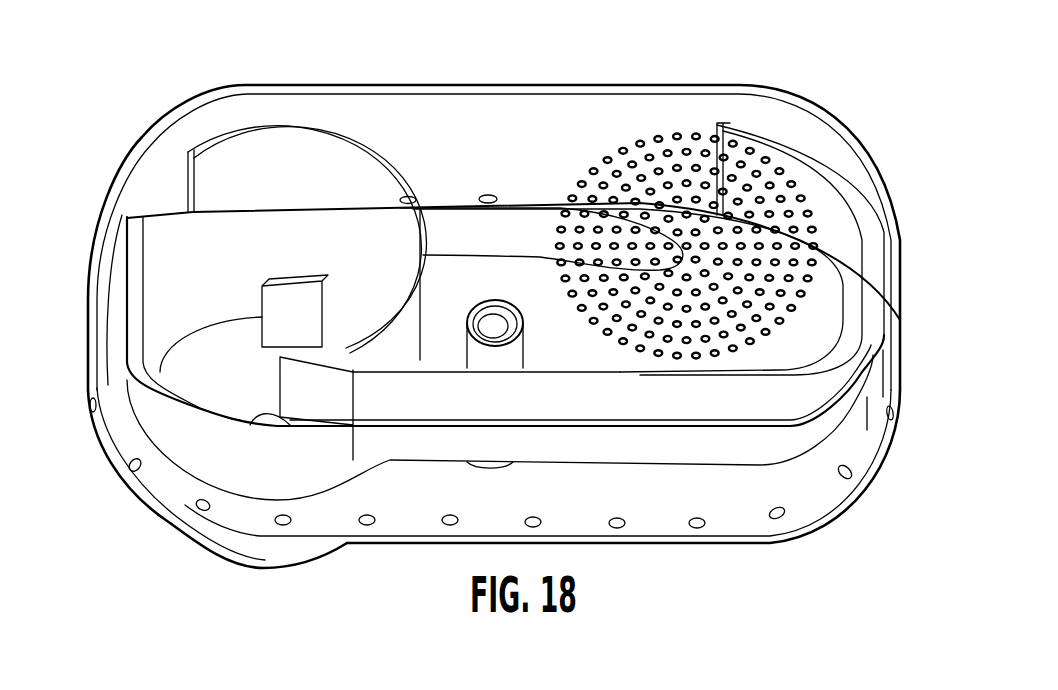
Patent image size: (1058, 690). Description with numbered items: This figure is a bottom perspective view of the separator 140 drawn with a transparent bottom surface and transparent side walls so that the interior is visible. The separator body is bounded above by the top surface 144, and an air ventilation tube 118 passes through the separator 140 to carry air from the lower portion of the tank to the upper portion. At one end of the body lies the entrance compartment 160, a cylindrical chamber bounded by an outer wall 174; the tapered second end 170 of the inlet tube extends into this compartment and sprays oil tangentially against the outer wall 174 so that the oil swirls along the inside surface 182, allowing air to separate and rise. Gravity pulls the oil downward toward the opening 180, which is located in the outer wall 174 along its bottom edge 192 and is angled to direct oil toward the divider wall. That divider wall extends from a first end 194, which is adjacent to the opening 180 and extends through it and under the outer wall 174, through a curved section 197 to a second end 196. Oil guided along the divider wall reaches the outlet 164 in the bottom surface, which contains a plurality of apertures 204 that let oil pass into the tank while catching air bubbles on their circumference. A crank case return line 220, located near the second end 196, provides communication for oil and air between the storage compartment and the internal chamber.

The air ventilation tube 118 is at (512, 352).
The separator 140 is at (496, 203).
The top surface 144 is at (495, 486).
The entrance compartment 160 is at (471, 385).
The outlet 164 is at (751, 201).
The second end 170 is at (283, 298).
The outer wall 174 is at (147, 397).
The opening 180 is at (169, 279).
The inside surface 182 is at (172, 283).
The bottom edge 192 is at (232, 137).
The first end 194 is at (390, 400).
The second end 196 is at (722, 125).
The curved section 197 is at (856, 278).
The apertures 204 is at (640, 143).
The crank case return line 220 is at (477, 233).